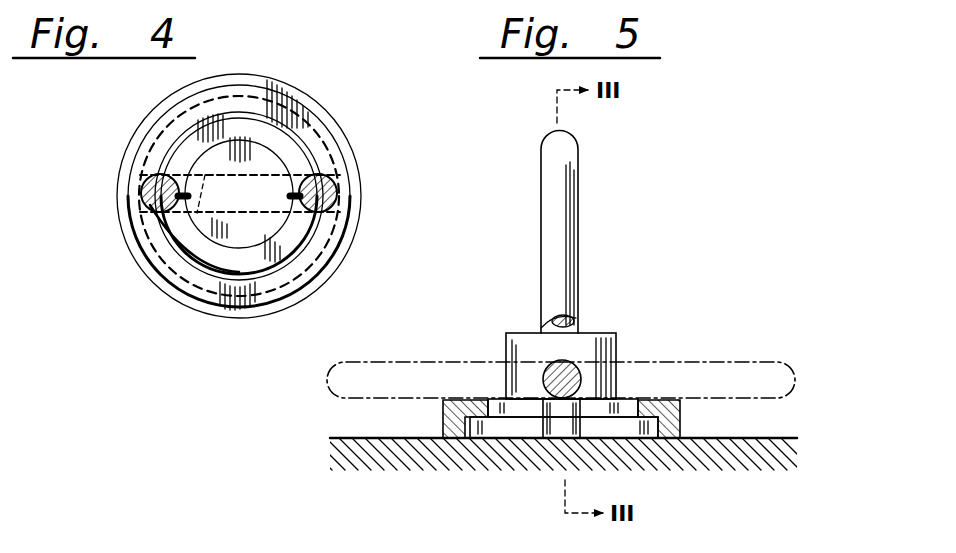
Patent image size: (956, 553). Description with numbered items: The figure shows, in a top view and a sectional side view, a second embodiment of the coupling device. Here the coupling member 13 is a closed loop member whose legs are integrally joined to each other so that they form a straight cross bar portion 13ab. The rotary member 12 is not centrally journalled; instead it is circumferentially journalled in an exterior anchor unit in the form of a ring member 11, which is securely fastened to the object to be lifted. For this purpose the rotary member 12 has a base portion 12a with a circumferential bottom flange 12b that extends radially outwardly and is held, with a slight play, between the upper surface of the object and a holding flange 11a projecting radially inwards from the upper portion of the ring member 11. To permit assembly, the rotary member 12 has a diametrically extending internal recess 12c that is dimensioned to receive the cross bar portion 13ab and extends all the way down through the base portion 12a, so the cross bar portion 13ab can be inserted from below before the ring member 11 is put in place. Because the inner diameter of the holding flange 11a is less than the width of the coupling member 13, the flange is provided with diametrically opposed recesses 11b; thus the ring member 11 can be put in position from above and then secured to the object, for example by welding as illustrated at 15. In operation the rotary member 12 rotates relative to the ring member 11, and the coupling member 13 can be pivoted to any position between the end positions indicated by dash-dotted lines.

In FIG. 4, the ring member 11 is at (330, 138).
In FIG. 5, the ring member 11 is at (445, 398).
In FIG. 4, the holding flange 11a is at (320, 162).
In FIG. 5, the holding flange 11a is at (652, 400).
In FIG. 4, the recesses 11b is at (148, 203).
In FIG. 4, the rotary member 12 is at (260, 150).
In FIG. 5, the rotary member 12 is at (600, 330).
In FIG. 4, the base portion 12a is at (283, 143).
In FIG. 5, the base portion 12a is at (527, 408).
In FIG. 5, the circumferential bottom flange 12b is at (487, 428).
In FIG. 4, the internal recess 12c is at (165, 274).
In FIG. 5, the internal recess 12c is at (562, 425).
In FIG. 4, the coupling member 13 is at (337, 192).
In FIG. 5, the coupling member 13 is at (553, 152).
In FIG. 4, the cross bar portion 13ab is at (170, 178).
In FIG. 5, the cross bar portion 13ab is at (543, 378).
In FIG. 5, the welding 15 is at (440, 437).